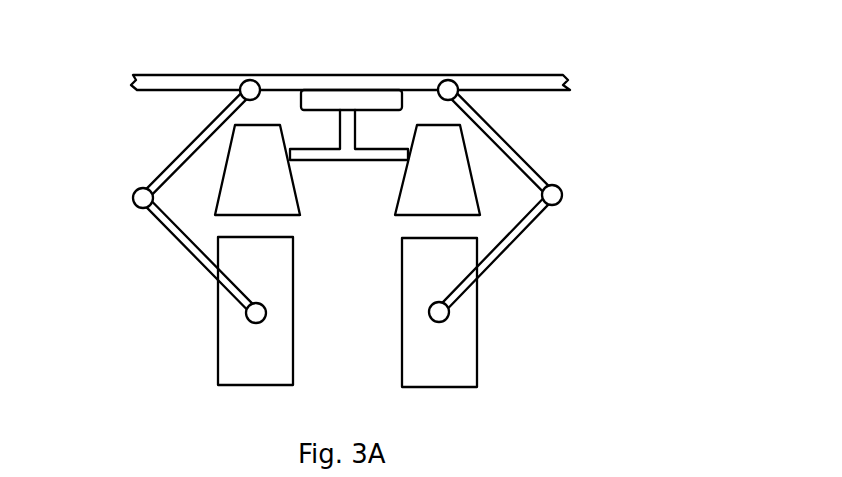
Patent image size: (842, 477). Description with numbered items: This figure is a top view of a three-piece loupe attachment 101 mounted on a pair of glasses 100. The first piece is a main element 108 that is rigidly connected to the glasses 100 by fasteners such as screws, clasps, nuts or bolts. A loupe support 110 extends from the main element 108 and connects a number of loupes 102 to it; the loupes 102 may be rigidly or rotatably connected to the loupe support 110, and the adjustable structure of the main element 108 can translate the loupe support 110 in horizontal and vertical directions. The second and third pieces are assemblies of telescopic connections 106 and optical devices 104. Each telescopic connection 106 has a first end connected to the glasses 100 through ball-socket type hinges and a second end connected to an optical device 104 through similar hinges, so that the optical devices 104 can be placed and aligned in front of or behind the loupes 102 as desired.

The glasses 100 is at (150, 79).
The gripper assembly 101 is at (622, 223).
The loupes 102 is at (463, 170).
The optical devices 104 is at (453, 362).
The telescopic connection 106 is at (193, 253).
The main element 108 is at (335, 100).
The loupe support 110 is at (322, 155).